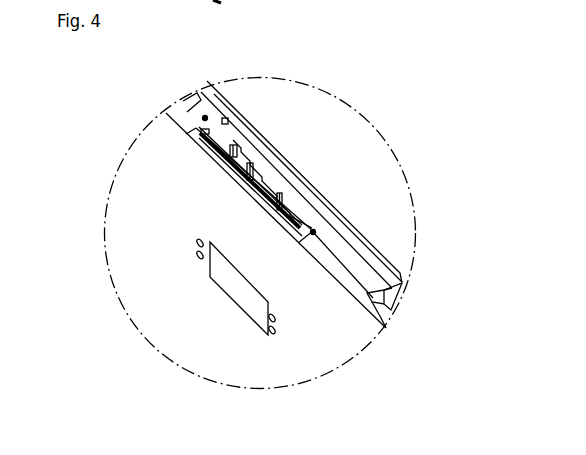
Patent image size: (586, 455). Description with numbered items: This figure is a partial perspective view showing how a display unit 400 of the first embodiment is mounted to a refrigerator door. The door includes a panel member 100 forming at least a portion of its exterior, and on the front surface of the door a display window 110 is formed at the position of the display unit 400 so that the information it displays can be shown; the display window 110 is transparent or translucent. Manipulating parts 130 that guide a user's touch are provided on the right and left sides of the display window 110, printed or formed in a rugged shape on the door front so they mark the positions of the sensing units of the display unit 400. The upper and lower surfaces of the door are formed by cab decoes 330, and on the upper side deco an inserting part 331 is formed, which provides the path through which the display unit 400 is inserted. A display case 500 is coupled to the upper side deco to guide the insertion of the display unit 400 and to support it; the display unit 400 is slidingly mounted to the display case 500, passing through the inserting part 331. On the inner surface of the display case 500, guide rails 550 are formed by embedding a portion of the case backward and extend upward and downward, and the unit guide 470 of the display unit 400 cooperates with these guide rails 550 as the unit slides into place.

The panel member 100 is at (203, 350).
The display window 110 is at (210, 276).
The manipulating parts 130 is at (275, 337).
The cab decoes 330 is at (336, 284).
The inserting part 331 is at (255, 172).
The display unit 400 is at (194, 268).
The unit guide 470 is at (233, 146).
The display case 500 is at (314, 212).
The guide rails 550 is at (250, 158).